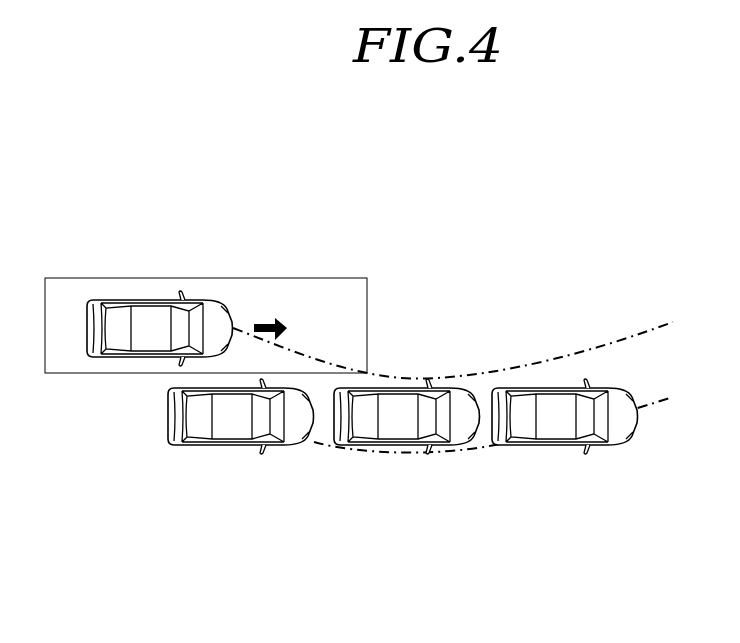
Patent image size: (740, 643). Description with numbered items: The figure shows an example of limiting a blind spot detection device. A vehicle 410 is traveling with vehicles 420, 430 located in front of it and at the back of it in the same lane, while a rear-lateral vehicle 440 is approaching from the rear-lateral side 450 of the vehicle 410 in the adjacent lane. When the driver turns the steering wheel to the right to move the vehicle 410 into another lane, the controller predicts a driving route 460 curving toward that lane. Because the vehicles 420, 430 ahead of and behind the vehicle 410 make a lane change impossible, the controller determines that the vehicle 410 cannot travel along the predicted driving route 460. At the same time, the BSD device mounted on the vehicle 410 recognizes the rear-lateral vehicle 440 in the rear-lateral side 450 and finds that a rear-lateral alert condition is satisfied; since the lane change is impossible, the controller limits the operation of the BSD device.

The vehicle 410 is at (385, 446).
The vehicle 420 is at (220, 447).
The vehicle 430 is at (568, 447).
The rear-lateral vehicle 440 is at (132, 298).
The rear-lateral side 450 is at (352, 278).
The predicted driving route 460 is at (662, 322).